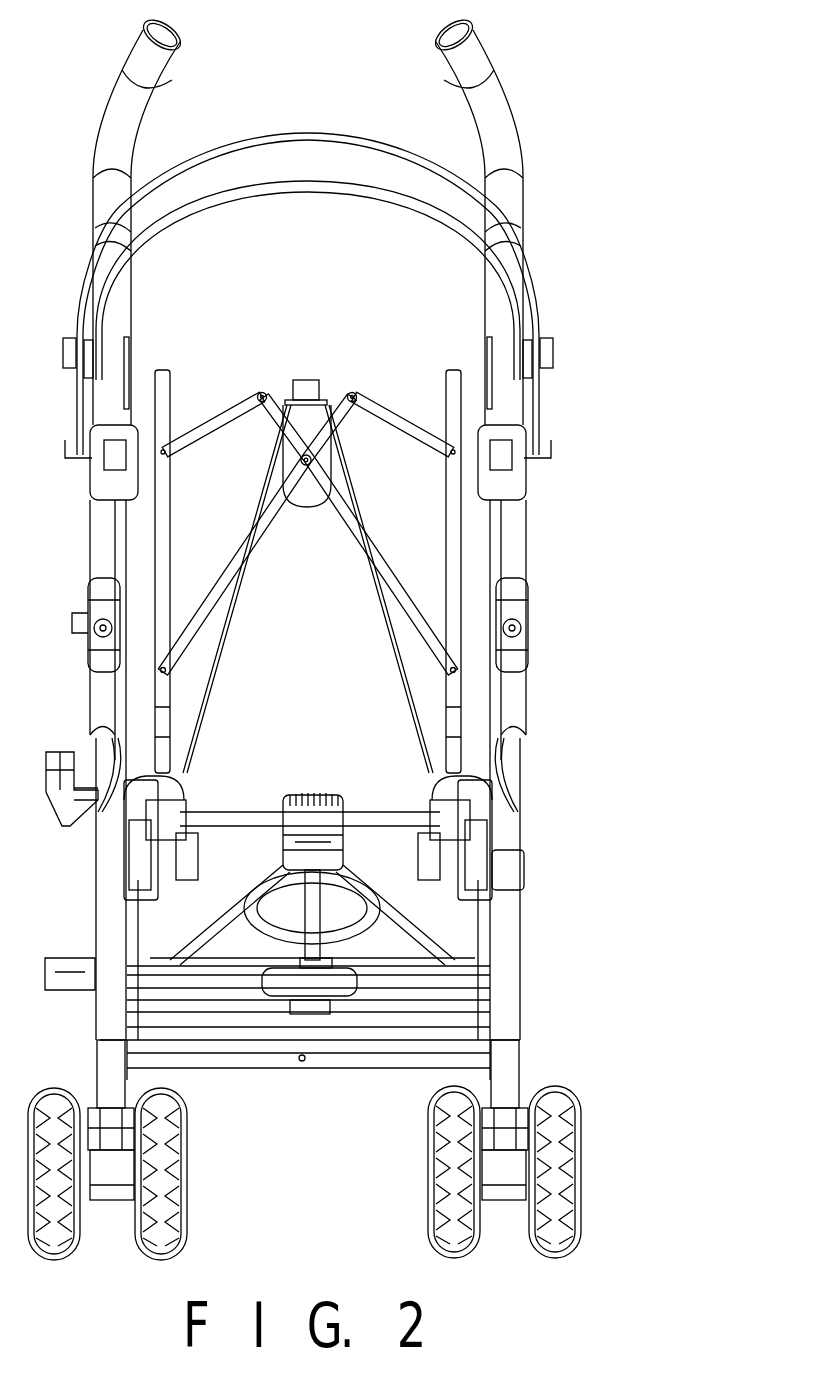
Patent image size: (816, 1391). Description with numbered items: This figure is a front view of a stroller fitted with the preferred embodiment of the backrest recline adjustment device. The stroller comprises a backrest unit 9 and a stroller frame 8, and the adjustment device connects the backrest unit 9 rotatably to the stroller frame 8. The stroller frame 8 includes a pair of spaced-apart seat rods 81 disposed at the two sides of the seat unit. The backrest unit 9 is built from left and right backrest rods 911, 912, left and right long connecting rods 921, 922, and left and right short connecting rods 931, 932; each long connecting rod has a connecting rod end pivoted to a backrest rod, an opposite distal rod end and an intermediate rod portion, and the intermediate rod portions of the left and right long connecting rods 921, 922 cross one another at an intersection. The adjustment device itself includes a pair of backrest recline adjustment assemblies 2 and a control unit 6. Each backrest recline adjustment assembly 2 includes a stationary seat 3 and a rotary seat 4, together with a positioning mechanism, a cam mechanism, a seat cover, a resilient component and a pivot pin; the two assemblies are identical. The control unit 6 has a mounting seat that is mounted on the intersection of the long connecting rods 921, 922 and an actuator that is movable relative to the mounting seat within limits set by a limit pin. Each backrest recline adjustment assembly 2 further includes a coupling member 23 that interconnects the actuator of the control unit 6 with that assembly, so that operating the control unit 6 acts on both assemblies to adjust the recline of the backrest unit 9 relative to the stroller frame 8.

The backrest recline adjustment assembly 2 is at (446, 906).
The stationary seat 3 is at (500, 884).
The rotary seat 4 is at (436, 842).
The control unit 6 is at (300, 362).
The stroller frame 8 is at (520, 940).
The seat rod 81 is at (136, 922).
The backrest unit 9 is at (207, 385).
The left backrest rod 911 is at (158, 537).
The right backrest rod 912 is at (455, 557).
The left long connecting rod 921 is at (264, 570).
The right long connecting rod 922 is at (384, 570).
The left short connecting rod 931 is at (255, 406).
The right short connecting rod 932 is at (374, 406).
The coupling member 23 is at (397, 678).